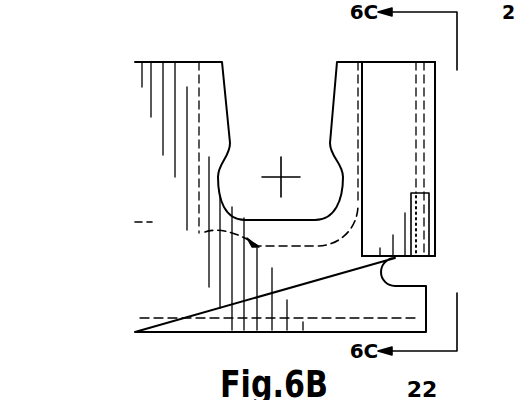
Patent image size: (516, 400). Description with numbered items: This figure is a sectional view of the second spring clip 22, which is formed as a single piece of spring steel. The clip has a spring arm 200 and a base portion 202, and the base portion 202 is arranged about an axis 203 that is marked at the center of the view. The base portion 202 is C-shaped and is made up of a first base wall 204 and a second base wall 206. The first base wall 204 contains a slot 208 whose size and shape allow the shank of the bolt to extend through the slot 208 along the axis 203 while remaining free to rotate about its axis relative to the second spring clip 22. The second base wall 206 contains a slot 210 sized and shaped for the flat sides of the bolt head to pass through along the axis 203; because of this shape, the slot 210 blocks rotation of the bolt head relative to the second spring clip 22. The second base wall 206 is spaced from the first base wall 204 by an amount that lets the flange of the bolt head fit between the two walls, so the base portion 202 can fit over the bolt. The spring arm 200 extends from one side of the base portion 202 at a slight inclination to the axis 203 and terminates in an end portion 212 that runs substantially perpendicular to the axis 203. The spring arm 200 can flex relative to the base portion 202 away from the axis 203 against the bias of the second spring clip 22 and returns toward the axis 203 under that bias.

The second spring clip 22 is at (86, 158).
The spring arm 200 is at (390, 155).
The base portion 202 is at (135, 177).
The axis 203 is at (282, 176).
The first base wall 204 is at (148, 88).
The second base wall 206 is at (152, 222).
The slot 208 is at (227, 89).
The slot 210 is at (205, 232).
The end portion 212 is at (428, 197).